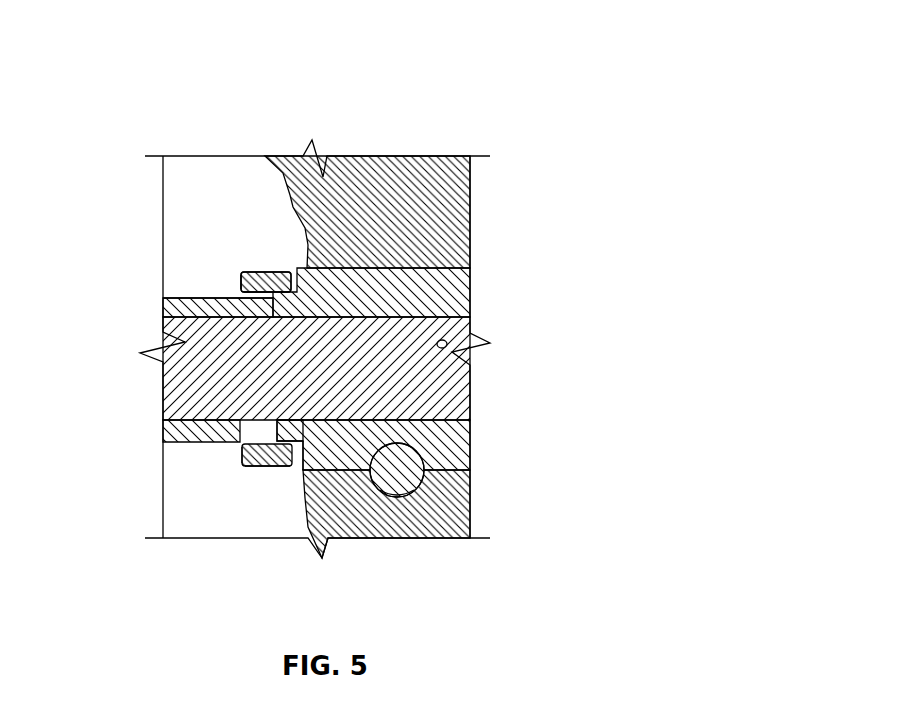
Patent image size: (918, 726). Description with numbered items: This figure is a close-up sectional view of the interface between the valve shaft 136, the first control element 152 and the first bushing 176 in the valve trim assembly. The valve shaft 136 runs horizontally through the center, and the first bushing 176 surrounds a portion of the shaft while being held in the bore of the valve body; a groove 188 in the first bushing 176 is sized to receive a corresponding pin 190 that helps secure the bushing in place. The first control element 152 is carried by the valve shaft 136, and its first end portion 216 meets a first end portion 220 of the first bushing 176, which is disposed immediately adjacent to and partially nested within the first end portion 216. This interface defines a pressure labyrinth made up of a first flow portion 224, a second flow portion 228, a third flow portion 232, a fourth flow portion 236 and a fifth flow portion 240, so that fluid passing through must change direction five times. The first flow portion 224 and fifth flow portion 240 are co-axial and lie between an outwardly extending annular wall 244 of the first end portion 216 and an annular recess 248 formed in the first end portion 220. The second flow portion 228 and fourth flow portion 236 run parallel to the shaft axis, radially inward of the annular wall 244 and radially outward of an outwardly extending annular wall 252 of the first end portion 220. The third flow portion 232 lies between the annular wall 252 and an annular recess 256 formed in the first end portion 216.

The valve shaft 136 is at (453, 388).
The first control element 152 is at (190, 445).
The first bushing 176 is at (418, 267).
The groove 188 is at (425, 458).
The pin 190 is at (410, 490).
The first end portion of the first control element 216 is at (250, 250).
The first end portion of the first bushing 220 is at (383, 252).
The first flow portion 224 is at (270, 462).
The second flow portion 228 is at (280, 463).
The third flow portion 232 is at (265, 452).
The fourth flow portion 236 is at (250, 273).
The fifth flow portion 240 is at (283, 273).
The outwardly extending annular wall 244 is at (240, 287).
The annular recess 248 is at (305, 442).
The outwardly extending annular wall 252 is at (295, 424).
The annular recess 256 is at (250, 303).